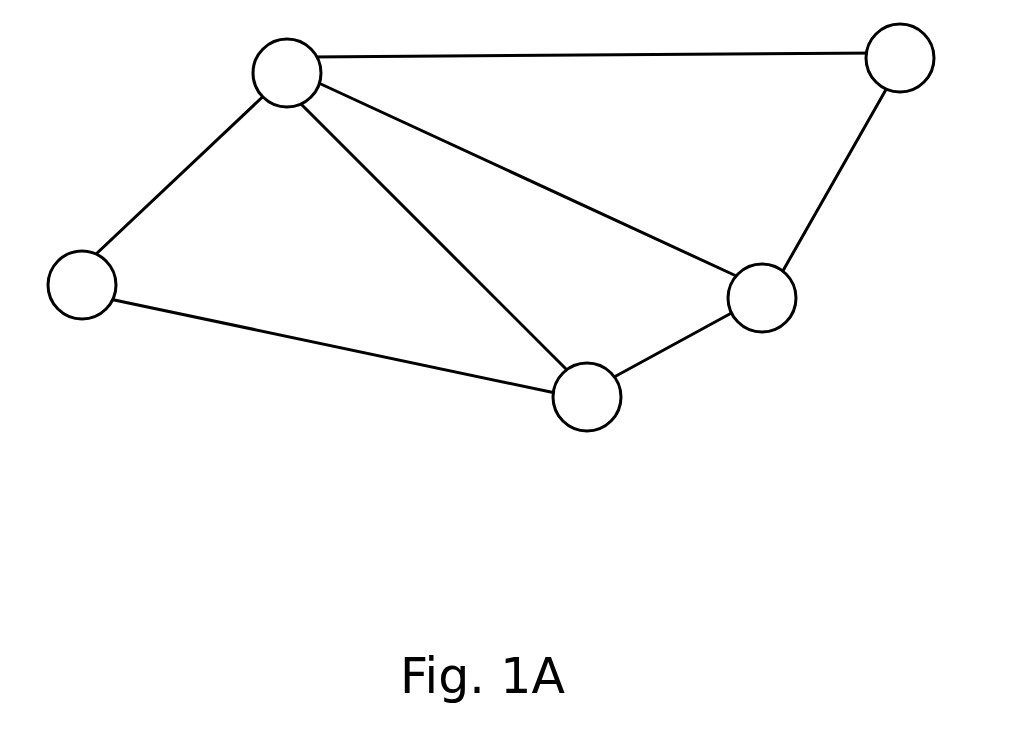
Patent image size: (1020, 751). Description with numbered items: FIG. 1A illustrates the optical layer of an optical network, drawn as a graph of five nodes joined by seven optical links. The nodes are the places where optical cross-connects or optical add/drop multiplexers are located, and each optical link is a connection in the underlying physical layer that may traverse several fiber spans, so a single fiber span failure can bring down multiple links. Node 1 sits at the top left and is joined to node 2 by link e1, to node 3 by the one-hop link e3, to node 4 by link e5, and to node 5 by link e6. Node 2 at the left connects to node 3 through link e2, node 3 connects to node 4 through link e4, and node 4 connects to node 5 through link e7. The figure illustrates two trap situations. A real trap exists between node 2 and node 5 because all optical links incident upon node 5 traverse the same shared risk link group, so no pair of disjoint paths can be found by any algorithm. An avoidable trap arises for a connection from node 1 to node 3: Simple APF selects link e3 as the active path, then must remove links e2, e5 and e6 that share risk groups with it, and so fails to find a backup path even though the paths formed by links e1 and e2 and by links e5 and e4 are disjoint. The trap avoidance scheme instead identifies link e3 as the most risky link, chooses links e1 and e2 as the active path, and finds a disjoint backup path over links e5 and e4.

The node 1 is at (287, 73).
The node 2 is at (82, 285).
The node 3 is at (587, 397).
The node 4 is at (762, 298).
The node 5 is at (900, 58).
The optical link e1 is at (183, 171).
The optical link e2 is at (332, 346).
The optical link e3 is at (435, 238).
The optical link e4 is at (671, 346).
The optical link e5 is at (527, 179).
The optical link e6 is at (595, 37).
The optical link e7 is at (834, 181).